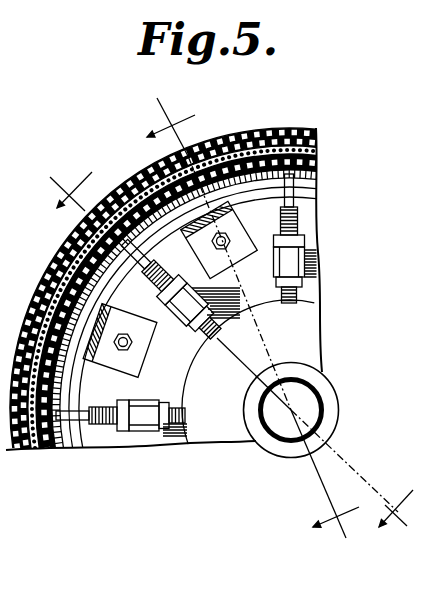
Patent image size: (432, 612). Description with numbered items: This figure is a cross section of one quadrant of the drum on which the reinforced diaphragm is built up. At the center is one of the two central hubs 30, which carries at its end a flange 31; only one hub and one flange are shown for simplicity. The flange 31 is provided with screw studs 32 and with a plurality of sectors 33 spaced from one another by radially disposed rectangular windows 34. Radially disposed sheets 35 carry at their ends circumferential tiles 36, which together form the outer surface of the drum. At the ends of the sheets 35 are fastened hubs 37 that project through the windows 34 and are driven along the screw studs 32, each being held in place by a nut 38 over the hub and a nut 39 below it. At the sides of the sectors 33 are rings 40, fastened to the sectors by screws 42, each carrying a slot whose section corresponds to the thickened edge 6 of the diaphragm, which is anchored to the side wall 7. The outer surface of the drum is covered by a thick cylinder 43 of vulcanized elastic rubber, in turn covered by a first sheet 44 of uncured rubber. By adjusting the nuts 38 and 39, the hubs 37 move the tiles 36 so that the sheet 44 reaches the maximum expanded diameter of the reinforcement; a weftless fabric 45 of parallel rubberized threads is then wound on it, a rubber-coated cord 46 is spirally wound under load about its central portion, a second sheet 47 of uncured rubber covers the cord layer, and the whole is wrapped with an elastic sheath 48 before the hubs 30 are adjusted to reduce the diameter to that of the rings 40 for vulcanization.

The central hub 30 is at (338, 402).
The flange 31 is at (223, 436).
The screw stud 32 is at (317, 228).
The sector 33 is at (257, 292).
The rectangular window 34 is at (319, 203).
The radially disposed sheet 35 is at (322, 192).
The circumferential tile 36 is at (269, 168).
The hub 37 is at (305, 262).
The nut 38 is at (317, 250).
The nut 39 is at (317, 284).
The ring 40 is at (237, 210).
The screw 42 is at (213, 242).
The cylinder of vulcanized elastic rubber 43 is at (320, 168).
The first sheet of uncured rubber 44 is at (320, 157).
The weftless fabric 45 is at (320, 147).
The cord 46 is at (322, 138).
The second sheet of uncured rubber 47 is at (324, 133).
The elastic sheath 48 is at (222, 128).
The thickened edge 6 is at (236, 345).
The side wall 7 is at (255, 316).